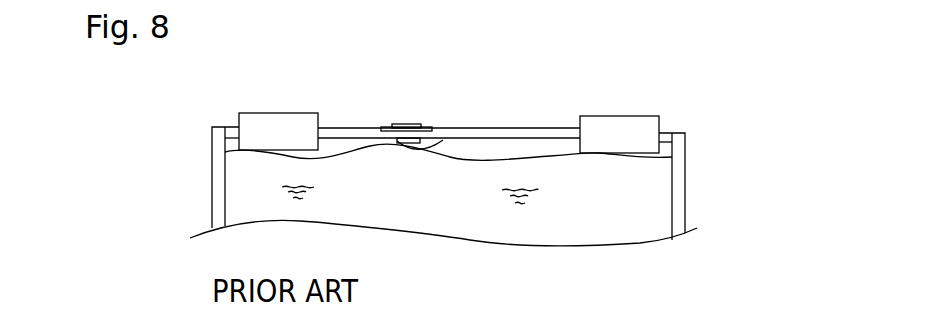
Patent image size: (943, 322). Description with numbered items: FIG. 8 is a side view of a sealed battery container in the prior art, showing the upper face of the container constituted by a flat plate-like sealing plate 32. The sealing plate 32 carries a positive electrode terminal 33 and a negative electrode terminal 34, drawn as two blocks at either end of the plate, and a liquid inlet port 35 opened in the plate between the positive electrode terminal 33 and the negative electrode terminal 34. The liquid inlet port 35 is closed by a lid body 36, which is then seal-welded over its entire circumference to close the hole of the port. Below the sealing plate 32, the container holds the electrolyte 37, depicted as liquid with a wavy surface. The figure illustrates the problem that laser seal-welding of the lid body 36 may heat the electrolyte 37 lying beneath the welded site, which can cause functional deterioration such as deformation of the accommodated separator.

The sealing plate 32 is at (530, 137).
The positive electrode terminal 33 is at (278, 113).
The negative electrode terminal 34 is at (623, 116).
The liquid inlet port 35 is at (443, 140).
The lid body 36 is at (396, 124).
The electrolyte 37 is at (633, 207).